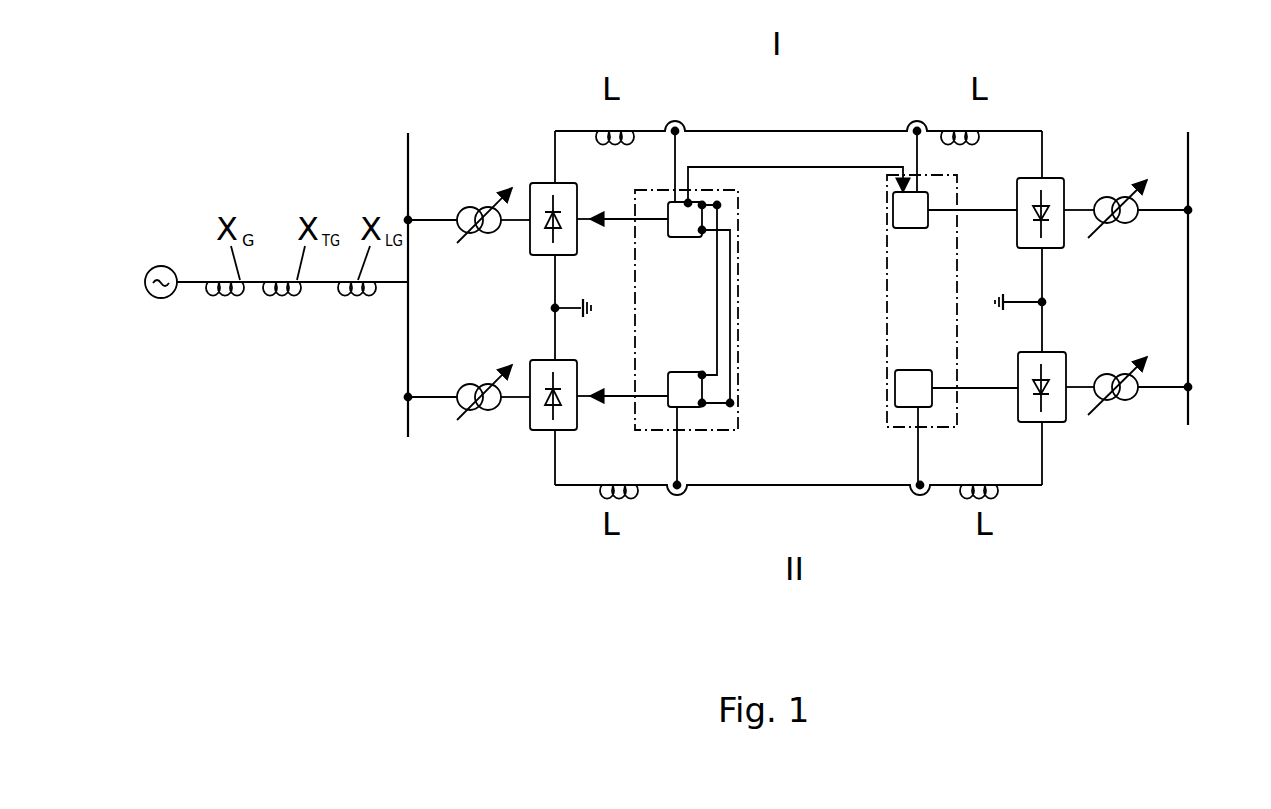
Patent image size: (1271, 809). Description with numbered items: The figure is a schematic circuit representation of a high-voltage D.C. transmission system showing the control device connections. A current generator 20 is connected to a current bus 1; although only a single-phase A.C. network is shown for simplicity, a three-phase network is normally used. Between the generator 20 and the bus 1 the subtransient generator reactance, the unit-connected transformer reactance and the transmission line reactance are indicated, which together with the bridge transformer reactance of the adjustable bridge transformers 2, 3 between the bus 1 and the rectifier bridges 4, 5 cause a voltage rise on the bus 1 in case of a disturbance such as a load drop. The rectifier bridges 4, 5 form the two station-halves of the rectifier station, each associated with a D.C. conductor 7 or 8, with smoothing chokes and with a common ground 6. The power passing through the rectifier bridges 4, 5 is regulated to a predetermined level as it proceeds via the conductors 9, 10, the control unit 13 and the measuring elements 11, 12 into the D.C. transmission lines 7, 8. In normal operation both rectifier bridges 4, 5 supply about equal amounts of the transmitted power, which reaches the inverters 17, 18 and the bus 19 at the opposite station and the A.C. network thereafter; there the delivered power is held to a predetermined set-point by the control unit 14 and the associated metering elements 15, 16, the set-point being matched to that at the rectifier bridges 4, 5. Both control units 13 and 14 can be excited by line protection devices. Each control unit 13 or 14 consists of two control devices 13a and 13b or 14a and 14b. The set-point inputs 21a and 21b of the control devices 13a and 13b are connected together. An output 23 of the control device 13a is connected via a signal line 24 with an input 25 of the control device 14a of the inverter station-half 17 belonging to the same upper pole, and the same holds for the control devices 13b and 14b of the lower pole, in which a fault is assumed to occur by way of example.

The current bus 1 is at (410, 170).
The adjustable bridge transformer 2 is at (489, 207).
The adjustable bridge transformer 3 is at (485, 384).
The rectifier bridge 4 is at (577, 184).
The rectifier bridge 5 is at (577, 388).
The common ground 6 is at (574, 311).
The D.C. conductor 7 is at (799, 130).
The D.C. conductor 8 is at (795, 488).
The conductor 9 is at (606, 218).
The conductor 10 is at (612, 400).
The measuring element 11 is at (675, 125).
The measuring element 12 is at (677, 490).
The control unit 13 is at (636, 280).
The control device 13a is at (678, 232).
The control device 13b is at (684, 378).
The control unit 14 is at (887, 281).
The control device 14a is at (925, 229).
The control device 14b is at (913, 367).
The metering element 15 is at (917, 125).
The metering element 16 is at (920, 490).
The inverter 17 is at (1065, 180).
The inverter 18 is at (1068, 352).
The bus 19 is at (1190, 185).
The current generator 20 is at (160, 266).
The set-point input 21a is at (716, 294).
The set-point input 21b is at (703, 233).
The output 23 is at (691, 202).
The signal line 24 is at (795, 175).
The input 25 is at (910, 210).